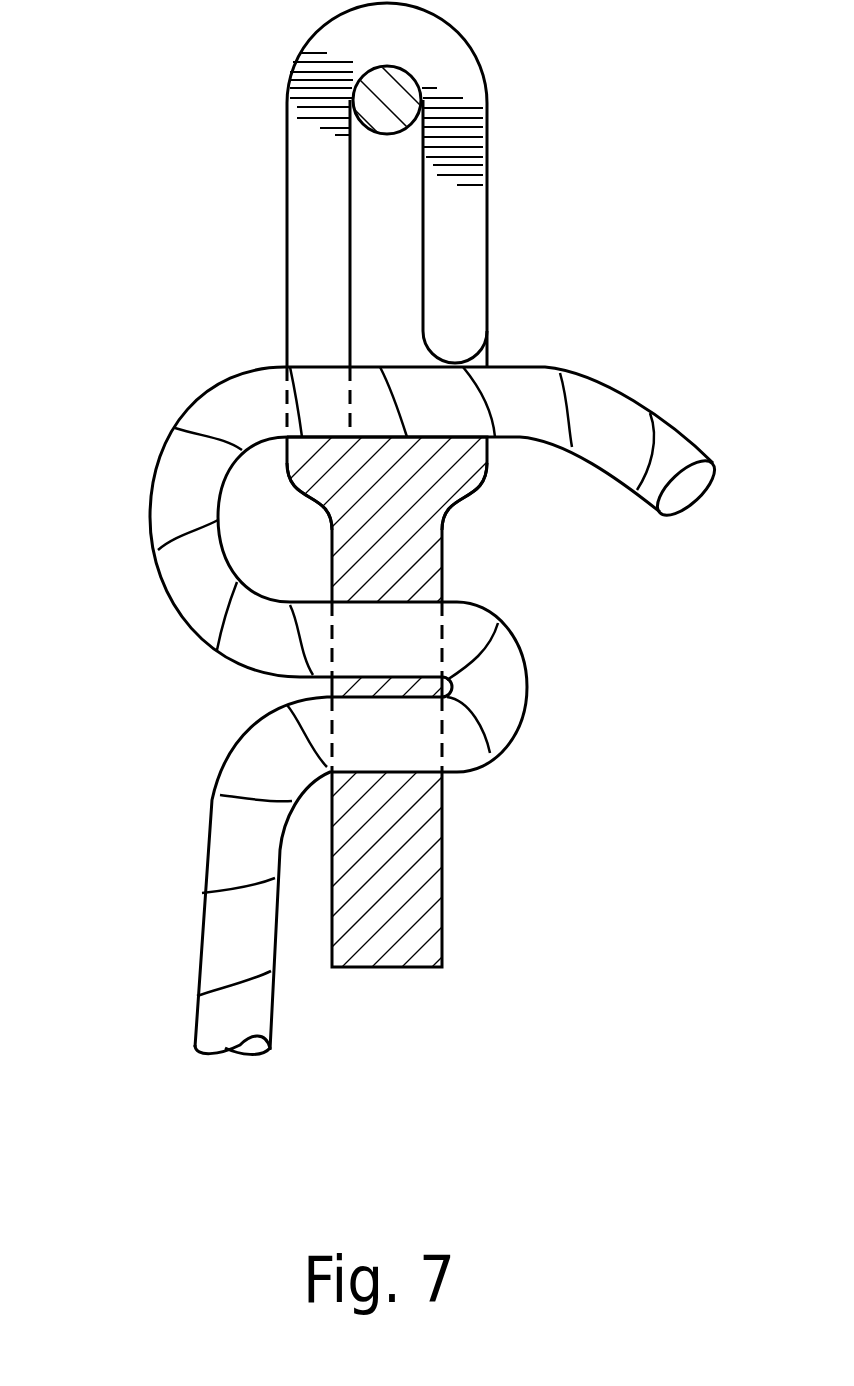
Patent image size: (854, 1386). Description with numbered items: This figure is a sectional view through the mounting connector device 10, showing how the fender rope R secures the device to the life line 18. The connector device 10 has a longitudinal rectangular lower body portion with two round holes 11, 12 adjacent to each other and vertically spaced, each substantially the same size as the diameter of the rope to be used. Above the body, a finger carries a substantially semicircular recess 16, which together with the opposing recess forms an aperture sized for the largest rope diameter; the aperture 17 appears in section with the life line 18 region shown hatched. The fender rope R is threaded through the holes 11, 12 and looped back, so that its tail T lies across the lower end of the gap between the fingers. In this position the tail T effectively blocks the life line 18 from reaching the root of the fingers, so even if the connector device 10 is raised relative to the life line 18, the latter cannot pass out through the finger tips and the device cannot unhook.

The connector device 10 is at (442, 930).
The round hole 11 is at (391, 772).
The round hole 12 is at (262, 597).
The semicircular recess 16 is at (487, 358).
The hole in strap loop 17 is at (383, 137).
The life line 18 is at (418, 441).
The fender rope R is at (153, 497).
The tail of the fender rope T is at (690, 437).